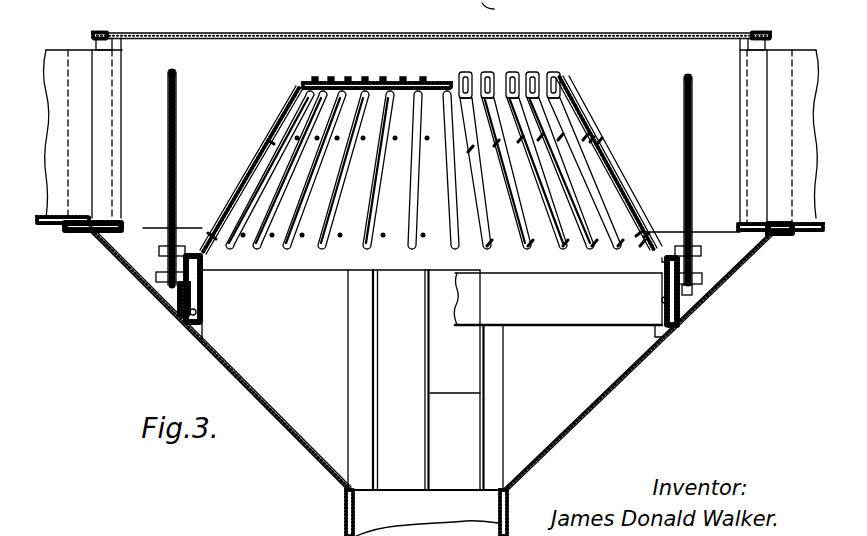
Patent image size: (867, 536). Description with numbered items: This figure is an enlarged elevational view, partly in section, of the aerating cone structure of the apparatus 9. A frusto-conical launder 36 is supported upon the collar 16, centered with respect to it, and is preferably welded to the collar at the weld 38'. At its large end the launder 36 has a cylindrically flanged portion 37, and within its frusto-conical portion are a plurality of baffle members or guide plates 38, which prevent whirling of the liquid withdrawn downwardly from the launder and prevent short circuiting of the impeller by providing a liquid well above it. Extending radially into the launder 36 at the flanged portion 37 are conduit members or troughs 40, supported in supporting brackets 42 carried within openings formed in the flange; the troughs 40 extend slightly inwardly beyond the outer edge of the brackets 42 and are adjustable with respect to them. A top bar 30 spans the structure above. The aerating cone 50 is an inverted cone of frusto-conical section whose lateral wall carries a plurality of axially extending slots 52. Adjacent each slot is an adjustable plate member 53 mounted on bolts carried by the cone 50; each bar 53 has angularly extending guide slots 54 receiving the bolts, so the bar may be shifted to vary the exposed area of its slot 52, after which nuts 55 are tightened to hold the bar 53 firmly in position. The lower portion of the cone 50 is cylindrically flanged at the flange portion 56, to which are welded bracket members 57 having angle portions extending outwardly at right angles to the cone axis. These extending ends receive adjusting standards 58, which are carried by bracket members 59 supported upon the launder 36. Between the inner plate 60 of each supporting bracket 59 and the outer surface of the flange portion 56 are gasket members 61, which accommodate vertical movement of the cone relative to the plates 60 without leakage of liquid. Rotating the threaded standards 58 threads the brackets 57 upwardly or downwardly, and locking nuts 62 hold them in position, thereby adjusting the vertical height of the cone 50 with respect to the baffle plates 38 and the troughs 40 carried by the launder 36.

The apparatus 9 is at (493, 8).
The collar 16 is at (345, 522).
The top bar 30 is at (431, 21).
The launder 36 is at (204, 354).
The cylindrically flanged portion 37 is at (95, 34).
The baffle members 38 is at (430, 359).
The weld 38' is at (321, 512).
The troughs 40 is at (54, 56).
The supporting brackets 42 is at (86, 232).
The cone 50 is at (445, 96).
The slots 52 is at (410, 205).
The adjustable plate member 53 is at (556, 80).
The guide slots 54 is at (268, 141).
The nuts 55 is at (604, 141).
The flange portion 56 is at (568, 320).
The bracket members 57 is at (189, 255).
The adjusting standards 58 is at (166, 138).
The bracket members 59 is at (156, 282).
The inner plate 60 is at (186, 302).
The gasket members 61 is at (191, 314).
The locking nuts 62 is at (165, 247).